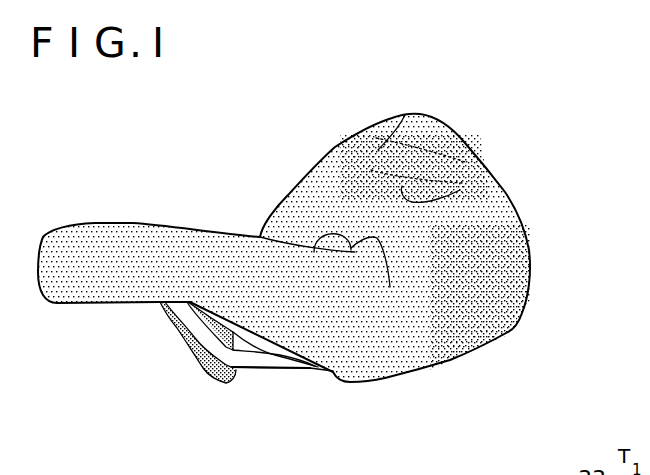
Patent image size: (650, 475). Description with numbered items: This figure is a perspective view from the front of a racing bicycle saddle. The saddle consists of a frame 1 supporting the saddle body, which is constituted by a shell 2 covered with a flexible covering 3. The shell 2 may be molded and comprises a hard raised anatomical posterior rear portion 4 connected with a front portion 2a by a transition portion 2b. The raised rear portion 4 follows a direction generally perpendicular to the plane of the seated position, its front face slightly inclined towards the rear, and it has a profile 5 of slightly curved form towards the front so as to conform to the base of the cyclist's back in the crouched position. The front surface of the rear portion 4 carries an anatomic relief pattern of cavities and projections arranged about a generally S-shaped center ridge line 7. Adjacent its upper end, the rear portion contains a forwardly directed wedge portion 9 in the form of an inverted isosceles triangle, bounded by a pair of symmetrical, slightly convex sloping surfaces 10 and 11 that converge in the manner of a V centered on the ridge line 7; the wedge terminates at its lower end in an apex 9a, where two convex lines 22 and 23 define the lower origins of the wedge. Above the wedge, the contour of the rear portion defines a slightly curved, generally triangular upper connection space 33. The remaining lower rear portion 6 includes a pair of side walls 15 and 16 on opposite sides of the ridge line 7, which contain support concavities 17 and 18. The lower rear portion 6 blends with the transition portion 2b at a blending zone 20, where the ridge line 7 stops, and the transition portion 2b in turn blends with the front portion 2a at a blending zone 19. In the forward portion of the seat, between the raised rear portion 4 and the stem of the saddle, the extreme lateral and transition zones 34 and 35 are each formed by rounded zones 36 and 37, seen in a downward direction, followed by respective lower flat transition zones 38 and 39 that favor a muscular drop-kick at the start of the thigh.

The frame 1 is at (147, 332).
The shell 2 is at (177, 213).
The front portion 2a is at (52, 250).
The transition portion 2b is at (322, 243).
The flexible covering 3 is at (357, 383).
The raised anatomical posterior rear portion 4 is at (558, 143).
The profile 5 is at (531, 223).
The lower rear portion 6 is at (282, 172).
The center ridge line 7 is at (406, 113).
The wedge portion 9 is at (452, 100).
The apex 9a is at (383, 203).
The sloping surface 10 is at (400, 150).
The sloping surface 11 is at (385, 203).
The side wall 15 is at (430, 243).
The side wall 16 is at (327, 188).
The support concavity 17 is at (467, 280).
The support concavity 18 is at (288, 217).
The blending zone 19 is at (338, 252).
The blending zone 20 is at (507, 128).
The convex line 22 is at (460, 190).
The convex line 23 is at (352, 178).
The upper connection space 33 is at (424, 114).
The lateral transition zone 34 is at (380, 388).
The lateral transition zone 35 is at (192, 381).
The rounded zone 36 is at (373, 320).
The rounded zone 37 is at (173, 345).
The lower flat transition zone 38 is at (347, 318).
The lower flat transition zone 39 is at (140, 312).